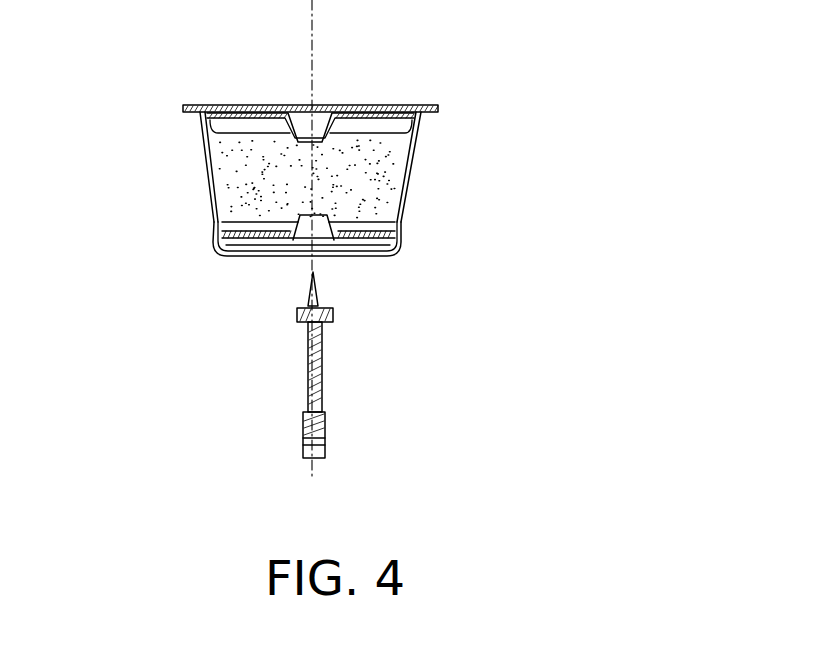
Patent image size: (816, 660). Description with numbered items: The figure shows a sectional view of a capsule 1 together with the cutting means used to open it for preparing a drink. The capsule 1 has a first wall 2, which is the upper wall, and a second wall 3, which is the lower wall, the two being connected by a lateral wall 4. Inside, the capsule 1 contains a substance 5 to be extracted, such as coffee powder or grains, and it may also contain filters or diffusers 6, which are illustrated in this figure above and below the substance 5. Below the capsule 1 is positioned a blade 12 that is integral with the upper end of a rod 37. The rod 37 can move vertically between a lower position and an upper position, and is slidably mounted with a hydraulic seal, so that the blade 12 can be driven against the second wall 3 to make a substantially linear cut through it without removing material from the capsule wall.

The capsule 1 is at (485, 137).
The first wall 2 is at (320, 103).
The second wall 3 is at (368, 257).
The lateral wall 4 is at (412, 187).
The substance 5 is at (270, 195).
The filters or diffusers 6 is at (290, 118).
The blade 12 is at (307, 297).
The rod 37 is at (317, 377).